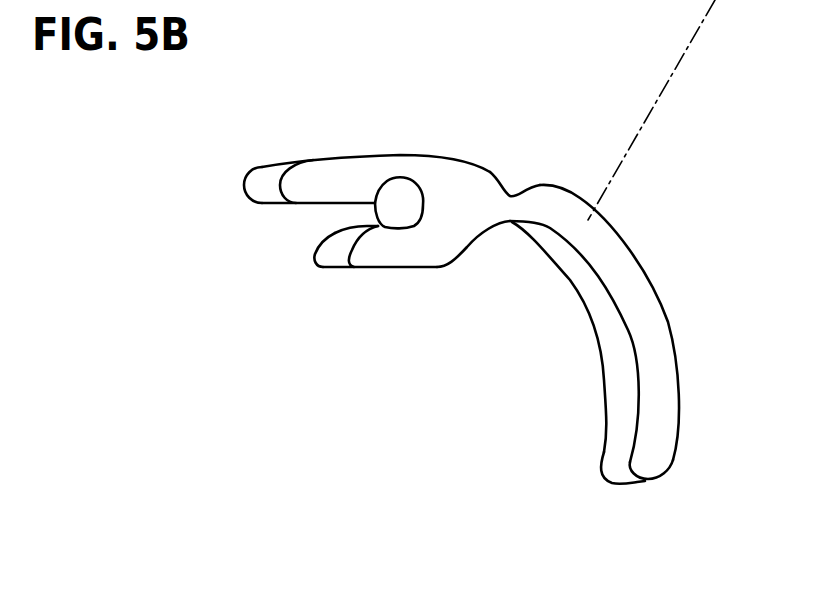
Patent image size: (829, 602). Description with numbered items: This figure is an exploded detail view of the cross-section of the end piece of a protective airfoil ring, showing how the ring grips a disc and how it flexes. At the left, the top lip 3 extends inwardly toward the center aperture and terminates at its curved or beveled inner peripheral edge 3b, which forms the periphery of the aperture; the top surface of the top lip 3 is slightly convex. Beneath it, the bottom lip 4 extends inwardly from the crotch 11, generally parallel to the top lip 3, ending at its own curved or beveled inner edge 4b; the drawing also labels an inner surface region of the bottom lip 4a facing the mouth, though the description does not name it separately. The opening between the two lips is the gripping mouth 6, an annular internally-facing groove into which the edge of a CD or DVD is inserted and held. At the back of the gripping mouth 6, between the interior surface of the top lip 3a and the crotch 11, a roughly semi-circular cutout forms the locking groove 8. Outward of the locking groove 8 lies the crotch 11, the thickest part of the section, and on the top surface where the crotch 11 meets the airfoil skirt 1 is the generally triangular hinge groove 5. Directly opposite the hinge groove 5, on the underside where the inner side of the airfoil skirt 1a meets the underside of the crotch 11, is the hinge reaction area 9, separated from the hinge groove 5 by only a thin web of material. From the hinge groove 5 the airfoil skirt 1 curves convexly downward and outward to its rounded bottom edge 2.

The airfoil skirt 1 is at (673, 323).
The inner side of the airfoil skirt 1a is at (617, 372).
The bottom edge of the airfoil skirt 2 is at (622, 483).
The top lip 3 is at (302, 160).
The interior surface of the top lip 3a is at (320, 202).
The inner peripheral edge of the top lip 3b is at (257, 182).
The bottom lip 4 is at (388, 255).
The slot in lower bar 4a is at (365, 236).
The inner edge of the bottom lip 4b is at (320, 260).
The hinge groove 5 is at (510, 193).
The gripping mouth 6 is at (360, 213).
The locking groove 8 is at (402, 177).
The hinge reaction area 9 is at (511, 223).
The crotch 11 is at (447, 217).